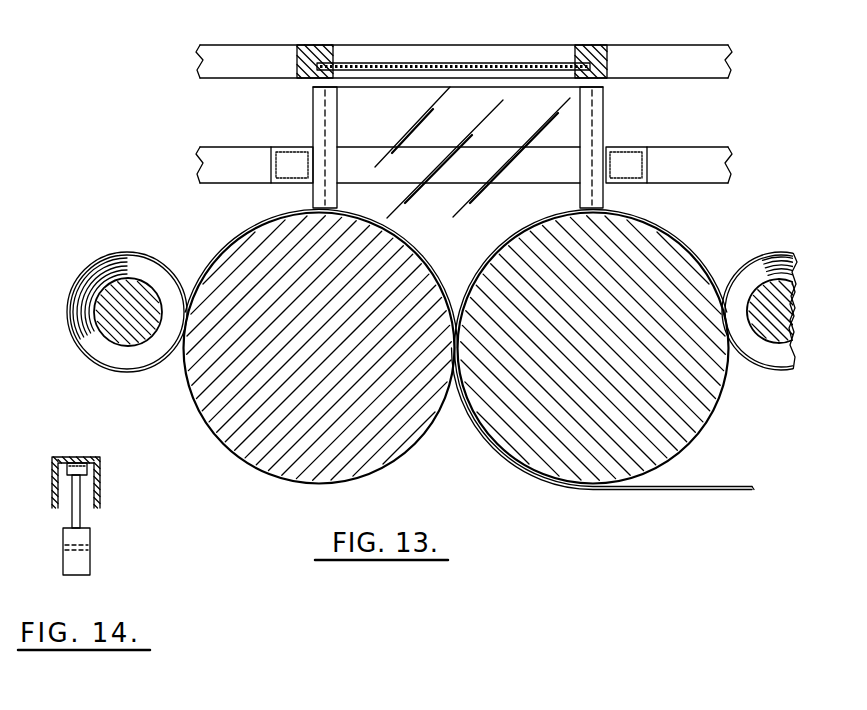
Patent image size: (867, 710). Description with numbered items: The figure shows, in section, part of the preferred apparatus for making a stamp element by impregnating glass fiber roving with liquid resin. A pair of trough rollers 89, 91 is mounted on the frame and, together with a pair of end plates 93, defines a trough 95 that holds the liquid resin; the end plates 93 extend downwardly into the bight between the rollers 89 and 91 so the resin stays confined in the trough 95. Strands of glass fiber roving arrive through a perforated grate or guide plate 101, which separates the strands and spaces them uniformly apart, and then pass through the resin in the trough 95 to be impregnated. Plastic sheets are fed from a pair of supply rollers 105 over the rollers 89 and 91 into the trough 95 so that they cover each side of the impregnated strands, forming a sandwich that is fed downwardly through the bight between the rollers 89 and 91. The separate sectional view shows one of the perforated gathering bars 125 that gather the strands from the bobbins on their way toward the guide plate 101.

In FIG. 13, the trough roller 89 is at (212, 415).
In FIG. 13, the trough roller 91 is at (687, 430).
In FIG. 13, the end plate 93 is at (565, 118).
In FIG. 13, the trough 95 is at (350, 117).
In FIG. 13, the perforated grate or guide plate 101 is at (495, 63).
In FIG. 13, the supply roller 105 is at (146, 256).
In FIG. 14, the perforated gathering bar 125 is at (87, 540).